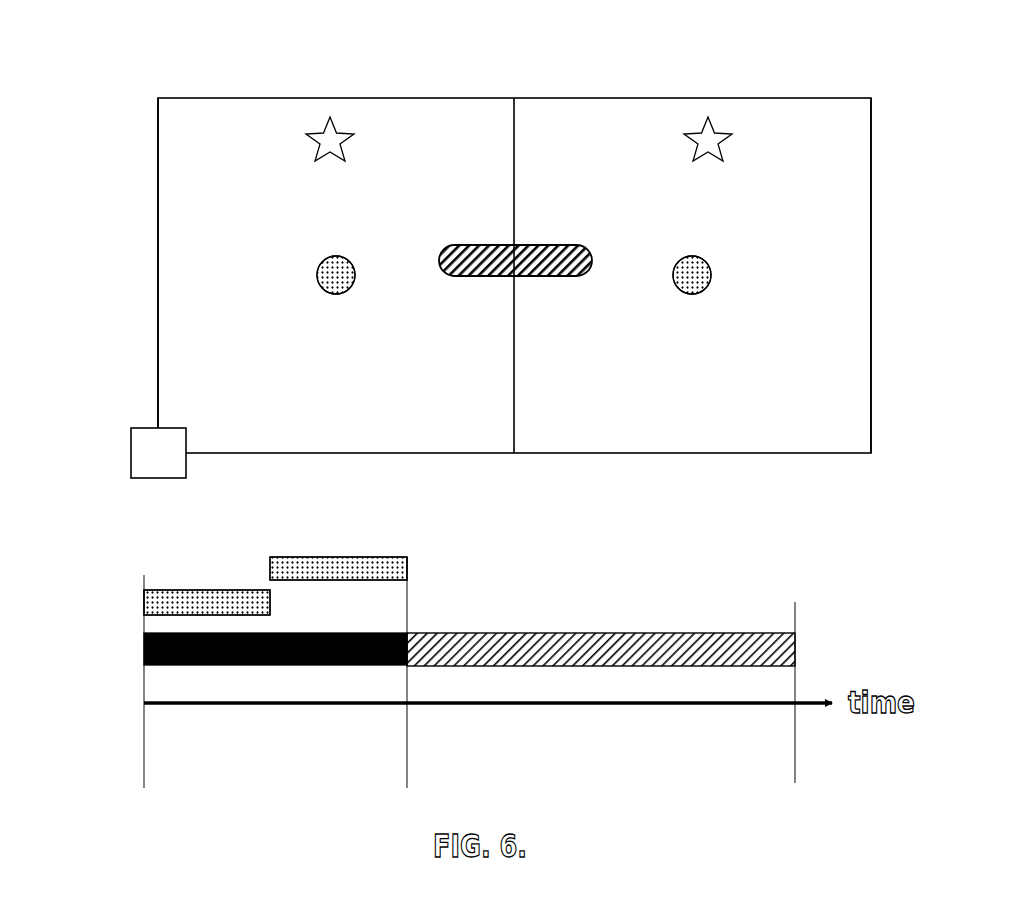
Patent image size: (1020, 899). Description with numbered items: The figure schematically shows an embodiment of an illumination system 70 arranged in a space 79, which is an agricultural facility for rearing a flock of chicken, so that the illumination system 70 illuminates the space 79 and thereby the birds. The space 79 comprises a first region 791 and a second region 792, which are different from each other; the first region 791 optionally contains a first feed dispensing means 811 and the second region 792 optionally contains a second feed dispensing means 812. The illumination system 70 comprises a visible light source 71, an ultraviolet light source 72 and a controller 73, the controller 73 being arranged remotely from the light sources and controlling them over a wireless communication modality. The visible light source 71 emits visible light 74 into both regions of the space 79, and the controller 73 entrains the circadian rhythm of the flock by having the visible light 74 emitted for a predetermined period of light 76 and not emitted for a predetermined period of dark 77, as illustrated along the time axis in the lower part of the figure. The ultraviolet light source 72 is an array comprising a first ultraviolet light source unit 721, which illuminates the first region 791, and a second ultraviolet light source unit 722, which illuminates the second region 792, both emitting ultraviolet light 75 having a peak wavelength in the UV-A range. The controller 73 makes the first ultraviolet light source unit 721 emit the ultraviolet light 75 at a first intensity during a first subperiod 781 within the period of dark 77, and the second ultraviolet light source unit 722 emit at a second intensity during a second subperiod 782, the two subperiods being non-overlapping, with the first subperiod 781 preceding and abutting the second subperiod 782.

The illumination system 70 is at (104, 105).
The space 79 is at (516, 92).
The first region 791 is at (158, 170).
The second region 792 is at (871, 168).
The first feed dispensing means 811 is at (341, 148).
The second feed dispensing means 812 is at (694, 148).
The ultraviolet light source 72 is at (300, 265).
The first ultraviolet light source unit 721 is at (336, 294).
The second ultraviolet light source unit 722 is at (698, 293).
The visible light source 71 is at (472, 277).
The controller 73 is at (157, 428).
The visible light 74 is at (603, 633).
The ultraviolet light 75 is at (144, 604).
The predetermined period of light 76 is at (795, 726).
The predetermined period of dark 77 is at (407, 731).
The first subperiod 781 is at (270, 582).
The second subperiod 782 is at (405, 545).